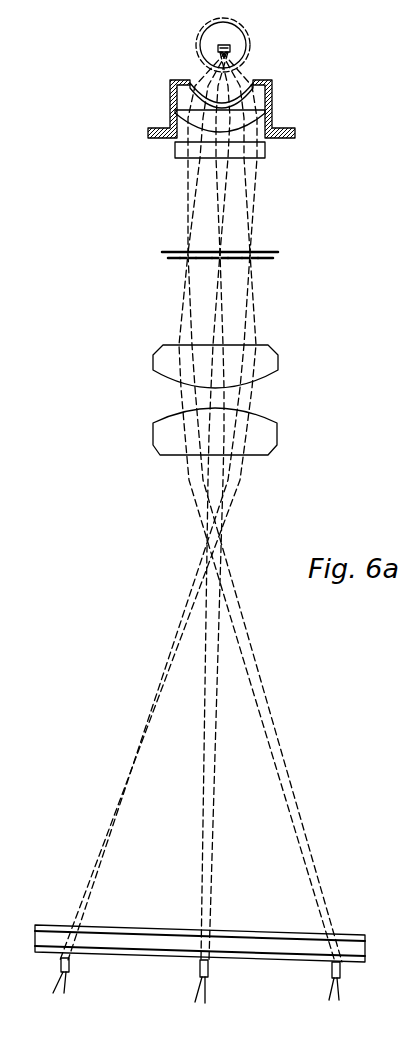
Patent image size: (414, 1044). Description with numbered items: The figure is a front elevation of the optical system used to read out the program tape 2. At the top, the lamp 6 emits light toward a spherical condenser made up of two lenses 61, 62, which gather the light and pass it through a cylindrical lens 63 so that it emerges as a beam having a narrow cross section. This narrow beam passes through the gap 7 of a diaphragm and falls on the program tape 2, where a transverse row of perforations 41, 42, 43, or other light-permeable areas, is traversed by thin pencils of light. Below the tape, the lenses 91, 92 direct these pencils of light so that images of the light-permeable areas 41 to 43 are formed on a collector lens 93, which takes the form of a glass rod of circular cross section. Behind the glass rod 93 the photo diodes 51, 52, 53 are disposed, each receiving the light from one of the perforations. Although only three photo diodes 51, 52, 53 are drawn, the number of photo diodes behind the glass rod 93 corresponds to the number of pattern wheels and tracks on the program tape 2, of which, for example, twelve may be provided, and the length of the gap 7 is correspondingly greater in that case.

The lamp 6 is at (247, 42).
The condenser lens 61 is at (253, 87).
The condenser lens 62 is at (265, 115).
The cylindrical lens 63 is at (265, 152).
The gap of diaphragm 7 is at (278, 252).
The program tape 2 is at (255, 259).
The perforation 41 is at (188, 262).
The perforation 42 is at (217, 263).
The perforation 43 is at (247, 263).
The lens 91 is at (272, 363).
The lens 92 is at (268, 442).
The collector lens 93 is at (258, 940).
The photo diode 51 is at (342, 972).
The photo diode 52 is at (208, 970).
The photo diode 53 is at (70, 968).